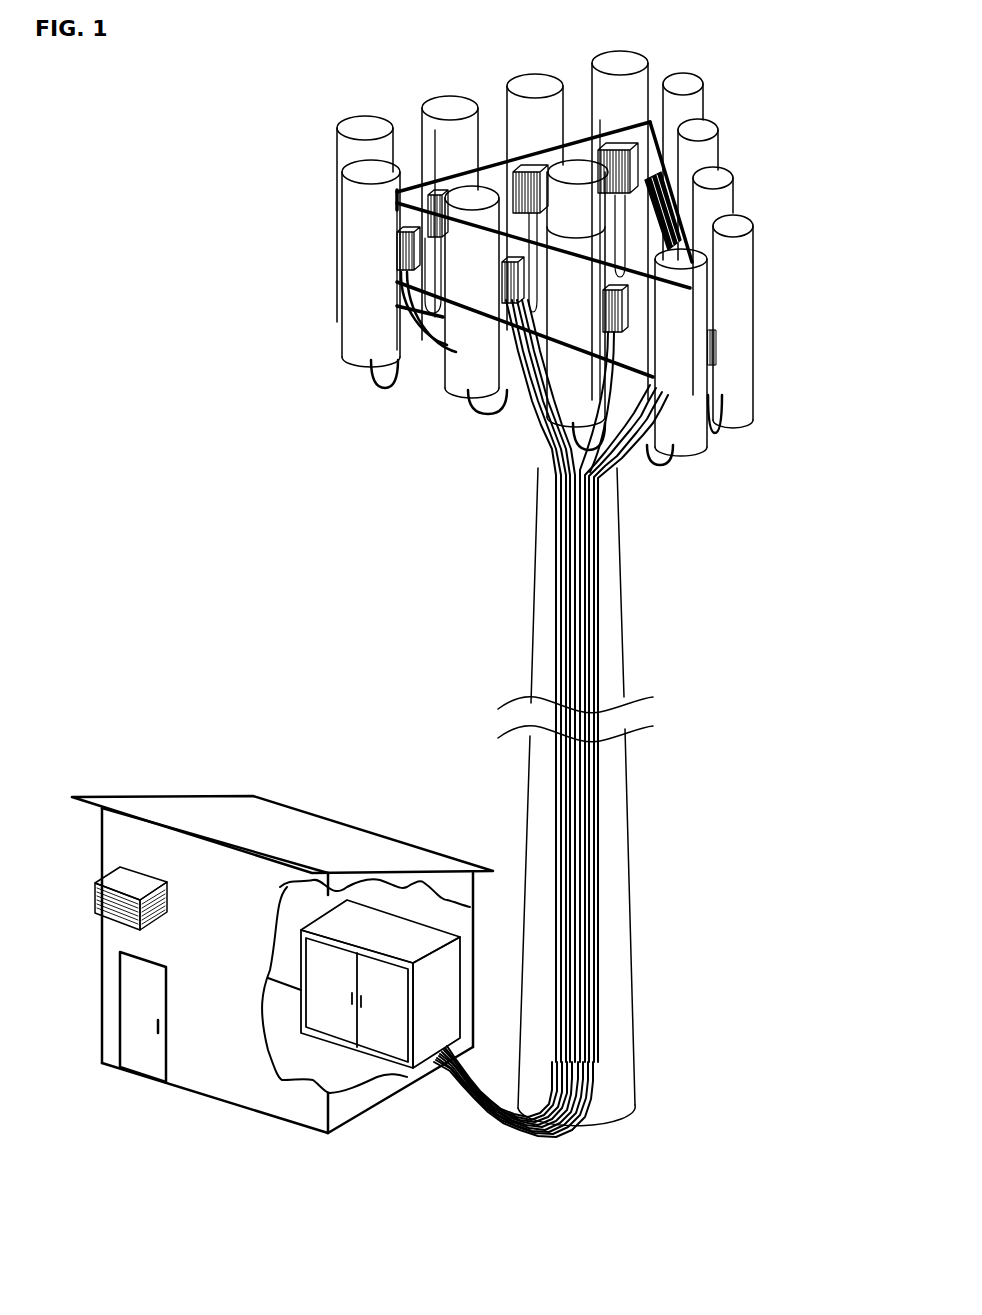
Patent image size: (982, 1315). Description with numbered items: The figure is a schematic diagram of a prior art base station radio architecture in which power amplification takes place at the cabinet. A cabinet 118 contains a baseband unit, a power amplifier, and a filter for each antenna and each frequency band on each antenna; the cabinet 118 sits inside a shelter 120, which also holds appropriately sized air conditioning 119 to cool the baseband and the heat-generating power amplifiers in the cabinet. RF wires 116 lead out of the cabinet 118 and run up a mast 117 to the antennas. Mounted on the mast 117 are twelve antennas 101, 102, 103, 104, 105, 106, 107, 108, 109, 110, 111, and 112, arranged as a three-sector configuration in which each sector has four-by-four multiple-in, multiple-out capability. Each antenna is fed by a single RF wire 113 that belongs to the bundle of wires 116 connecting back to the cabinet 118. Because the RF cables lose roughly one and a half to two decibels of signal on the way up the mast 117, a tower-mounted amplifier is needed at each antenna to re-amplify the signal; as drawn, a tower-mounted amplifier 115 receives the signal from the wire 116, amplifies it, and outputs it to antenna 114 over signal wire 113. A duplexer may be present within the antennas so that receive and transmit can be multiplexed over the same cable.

The antenna 101 is at (363, 118).
The antenna 102 is at (445, 95).
The antenna 103 is at (532, 74).
The antenna 104 is at (620, 48).
The antenna 105 is at (695, 73).
The antenna 106 is at (713, 125).
The antenna 107 is at (723, 172).
The antenna 108 is at (742, 218).
The antenna 109 is at (693, 455).
The antenna 110 is at (557, 400).
The antenna 111 is at (448, 393).
The antenna 112 is at (440, 343).
The RF wire 113 is at (373, 390).
The antenna 114 is at (343, 358).
The tower-mounted amplifier 115 is at (400, 228).
The RF wires 116 is at (595, 590).
The mast 117 is at (628, 630).
The cabinet 118 is at (417, 930).
The air conditioning 119 is at (95, 910).
The shelter 120 is at (102, 838).